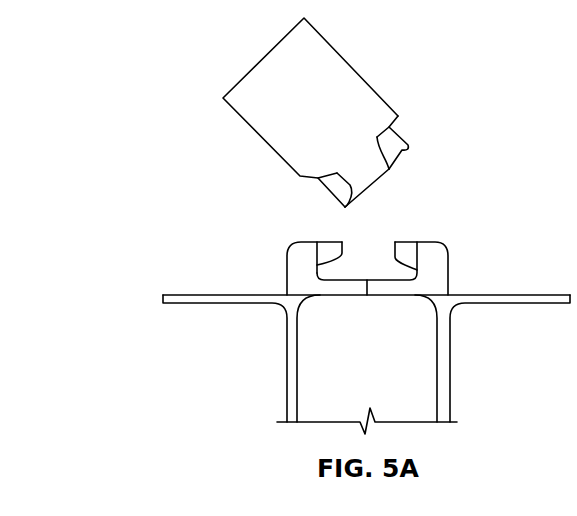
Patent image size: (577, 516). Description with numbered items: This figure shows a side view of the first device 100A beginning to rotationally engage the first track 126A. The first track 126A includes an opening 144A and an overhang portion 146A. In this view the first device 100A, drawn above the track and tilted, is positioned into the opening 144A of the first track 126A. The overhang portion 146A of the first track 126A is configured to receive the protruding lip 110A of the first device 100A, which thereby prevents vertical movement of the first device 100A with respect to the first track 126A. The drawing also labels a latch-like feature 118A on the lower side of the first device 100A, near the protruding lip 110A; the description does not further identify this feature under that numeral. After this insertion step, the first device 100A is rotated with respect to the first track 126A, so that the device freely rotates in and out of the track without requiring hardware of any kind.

The first device 100A is at (226, 127).
The latch 118A is at (405, 147).
The protruding lip 110A is at (356, 199).
The first track 126A is at (164, 283).
The overhang portion 146A is at (328, 247).
The opening 144A is at (359, 258).